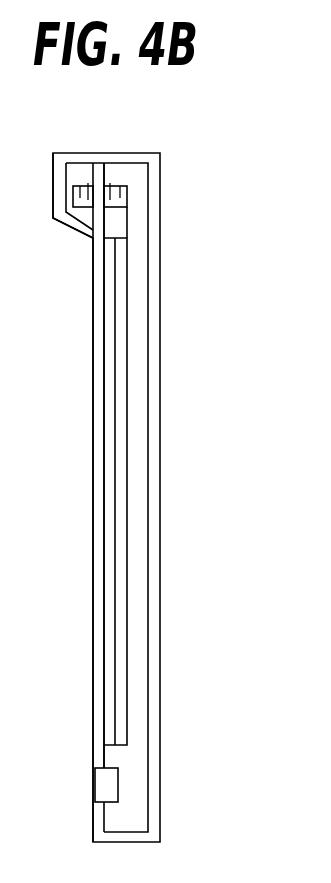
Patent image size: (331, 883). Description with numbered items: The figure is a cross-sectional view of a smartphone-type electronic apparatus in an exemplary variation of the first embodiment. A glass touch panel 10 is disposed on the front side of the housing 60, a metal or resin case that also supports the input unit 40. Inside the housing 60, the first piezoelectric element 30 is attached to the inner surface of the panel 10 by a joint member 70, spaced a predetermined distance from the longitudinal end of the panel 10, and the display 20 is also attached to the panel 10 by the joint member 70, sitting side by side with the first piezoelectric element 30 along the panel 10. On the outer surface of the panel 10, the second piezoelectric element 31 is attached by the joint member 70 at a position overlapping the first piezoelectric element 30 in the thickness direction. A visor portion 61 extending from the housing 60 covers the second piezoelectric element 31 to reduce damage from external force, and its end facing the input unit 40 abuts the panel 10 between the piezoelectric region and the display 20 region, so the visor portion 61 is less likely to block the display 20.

The panel 10 is at (102, 303).
The display 20 is at (120, 340).
The first piezoelectric element 30 is at (120, 186).
The second piezoelectric element 31 is at (79, 186).
The input unit 40 is at (100, 785).
The housing 60 is at (152, 198).
The visor portion 61 is at (53, 193).
The joint member 70 is at (110, 183).